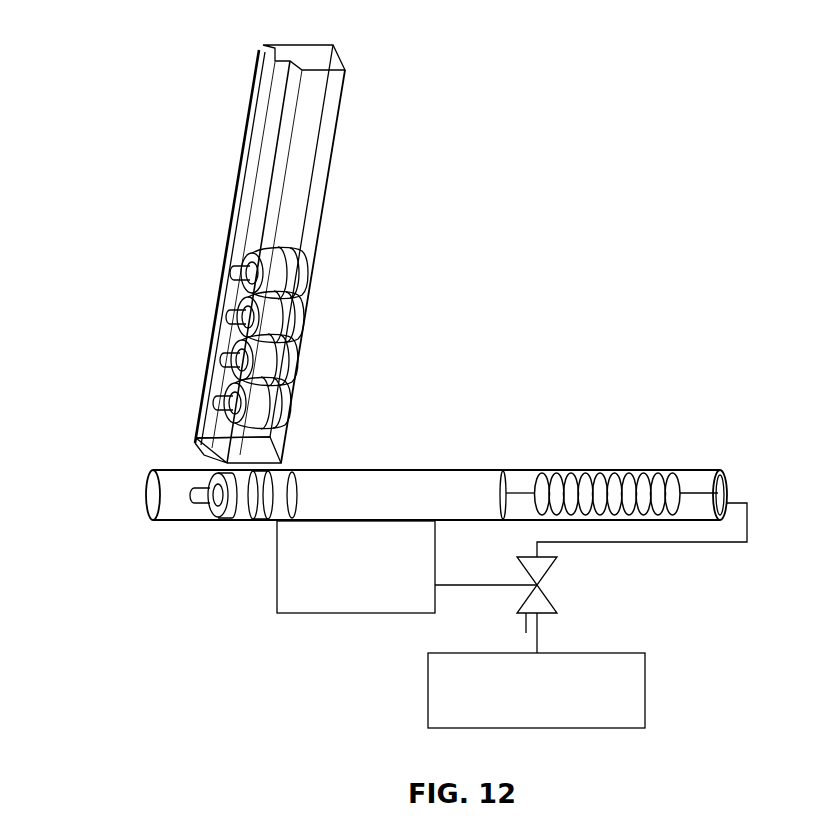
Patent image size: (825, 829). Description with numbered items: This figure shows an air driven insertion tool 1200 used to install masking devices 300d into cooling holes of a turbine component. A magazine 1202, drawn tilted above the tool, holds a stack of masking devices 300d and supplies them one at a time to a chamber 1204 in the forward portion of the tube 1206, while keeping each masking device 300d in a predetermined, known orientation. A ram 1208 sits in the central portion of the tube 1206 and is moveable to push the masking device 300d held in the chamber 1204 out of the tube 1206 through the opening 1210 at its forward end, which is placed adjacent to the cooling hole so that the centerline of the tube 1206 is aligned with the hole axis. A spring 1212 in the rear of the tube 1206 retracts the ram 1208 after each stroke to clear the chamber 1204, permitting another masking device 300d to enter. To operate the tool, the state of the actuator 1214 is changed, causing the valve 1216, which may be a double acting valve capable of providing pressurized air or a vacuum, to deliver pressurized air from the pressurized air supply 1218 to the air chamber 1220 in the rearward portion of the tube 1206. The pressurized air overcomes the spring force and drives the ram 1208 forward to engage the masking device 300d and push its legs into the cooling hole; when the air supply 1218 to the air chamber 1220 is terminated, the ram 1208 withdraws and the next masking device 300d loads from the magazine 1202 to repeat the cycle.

The air driven insertion tool 1200 is at (497, 147).
The magazine 1202 is at (342, 130).
The masking device 300d is at (277, 320).
The chamber 1204 is at (236, 520).
The tube 1206 is at (168, 470).
The ram 1208 is at (390, 470).
The opening 1210 is at (150, 497).
The spring 1212 is at (612, 478).
The actuator 1214 is at (355, 613).
The valve 1216 is at (548, 595).
The pressurized air supply 1218 is at (647, 690).
The air chamber 1220 is at (697, 485).